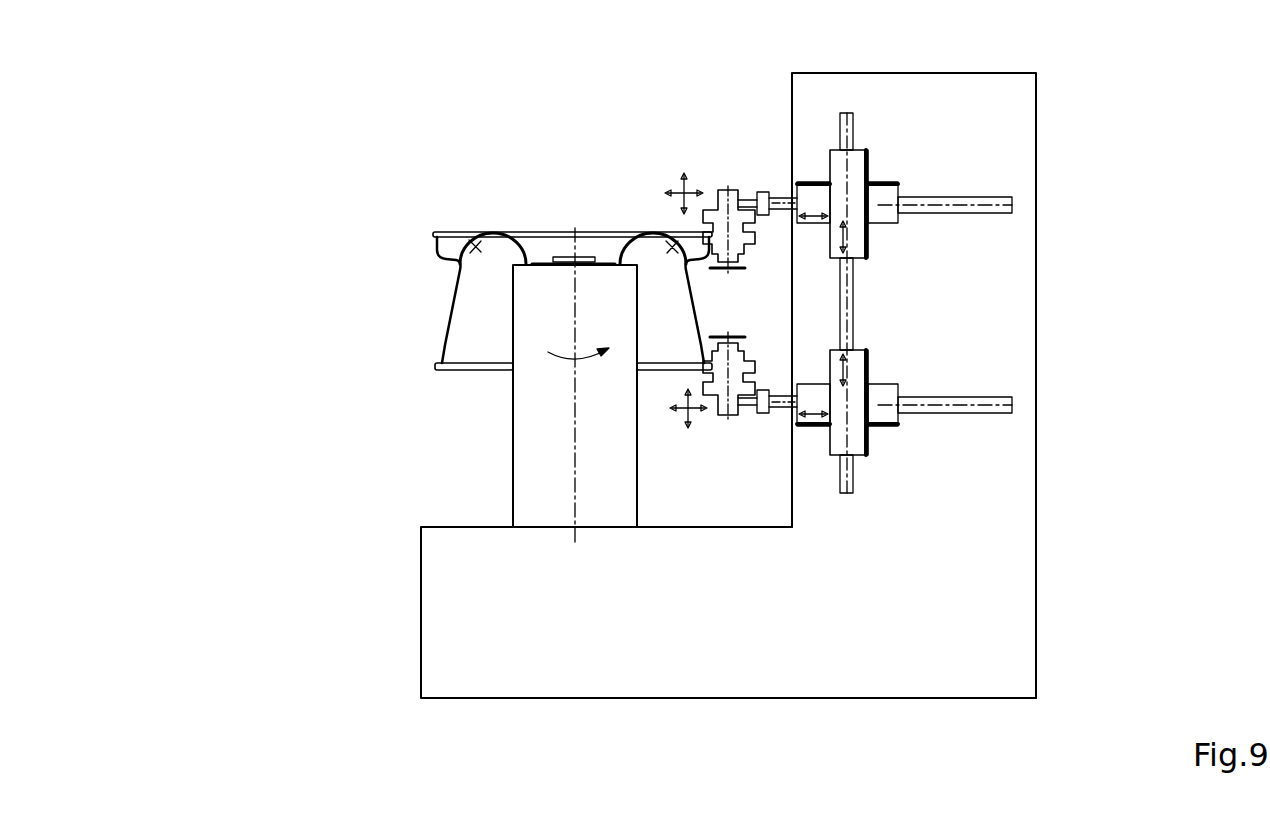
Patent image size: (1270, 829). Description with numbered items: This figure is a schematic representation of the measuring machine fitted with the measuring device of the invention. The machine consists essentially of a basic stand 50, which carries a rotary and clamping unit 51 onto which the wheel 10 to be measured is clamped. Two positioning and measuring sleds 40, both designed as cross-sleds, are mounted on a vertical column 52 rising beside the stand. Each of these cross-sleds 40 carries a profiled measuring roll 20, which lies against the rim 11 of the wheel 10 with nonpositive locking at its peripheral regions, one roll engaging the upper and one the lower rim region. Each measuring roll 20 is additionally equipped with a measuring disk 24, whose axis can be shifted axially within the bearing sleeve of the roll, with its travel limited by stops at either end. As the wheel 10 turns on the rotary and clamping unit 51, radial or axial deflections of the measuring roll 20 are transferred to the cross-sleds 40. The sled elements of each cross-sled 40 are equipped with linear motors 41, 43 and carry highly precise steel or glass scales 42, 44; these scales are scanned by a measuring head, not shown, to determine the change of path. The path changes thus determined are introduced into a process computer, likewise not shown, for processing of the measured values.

The wheel 10 is at (418, 362).
The rim 11 is at (453, 310).
The measuring roll 20 is at (710, 367).
The measuring disk 24 is at (715, 355).
The cross-sleds 40 is at (872, 124).
The linear motor 41 is at (857, 167).
The steel or glass scale 42 is at (868, 243).
The linear motor 43 is at (886, 215).
The steel or glass scale 44 is at (870, 185).
The basic stand 50 is at (445, 575).
The rotary and clamping unit 51 is at (528, 448).
The vertical column 52 is at (813, 107).